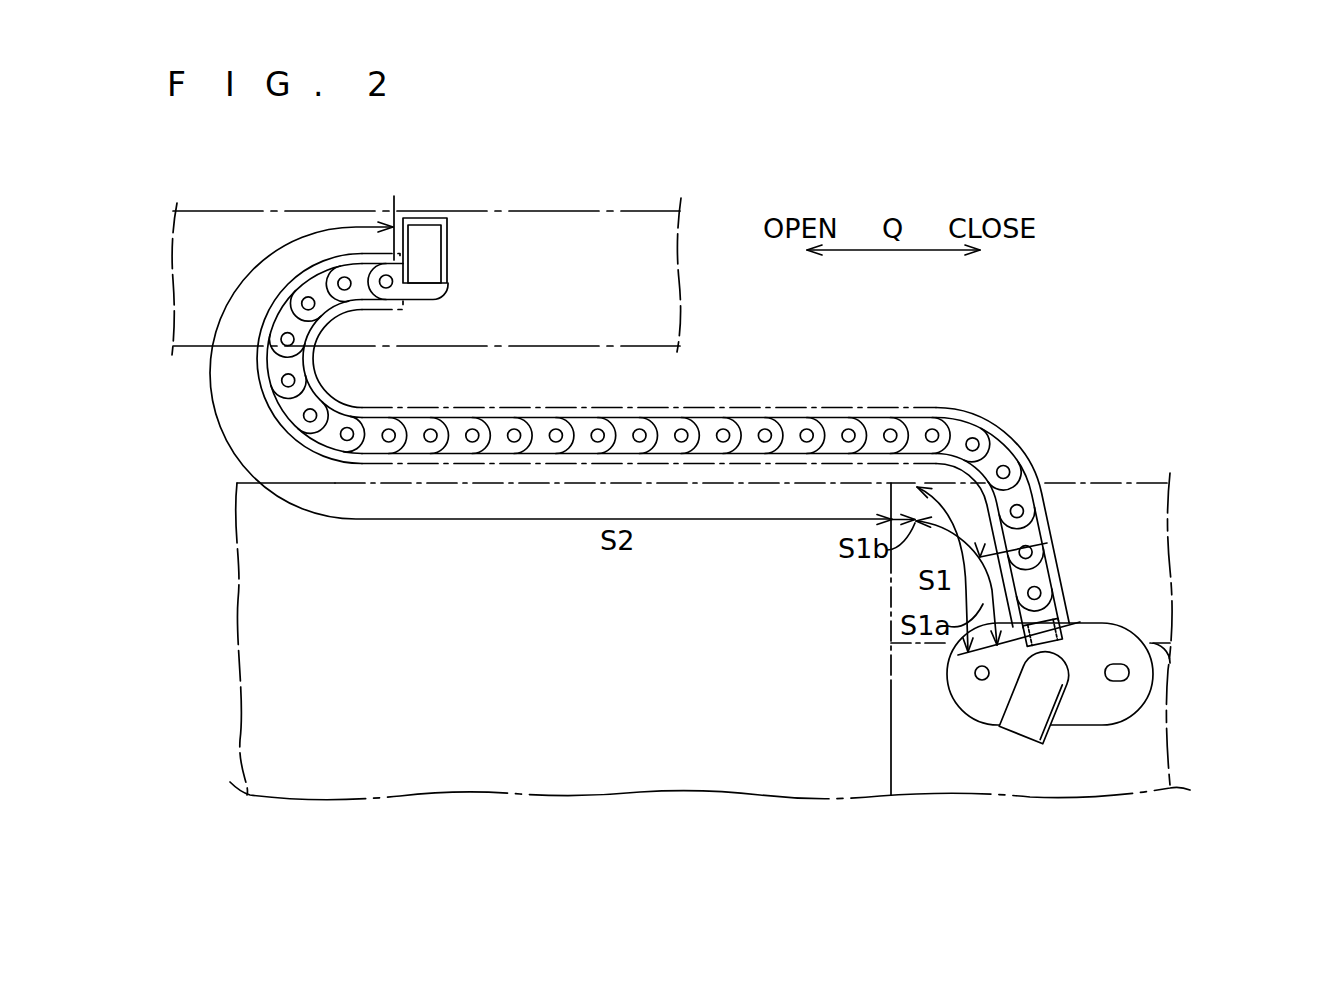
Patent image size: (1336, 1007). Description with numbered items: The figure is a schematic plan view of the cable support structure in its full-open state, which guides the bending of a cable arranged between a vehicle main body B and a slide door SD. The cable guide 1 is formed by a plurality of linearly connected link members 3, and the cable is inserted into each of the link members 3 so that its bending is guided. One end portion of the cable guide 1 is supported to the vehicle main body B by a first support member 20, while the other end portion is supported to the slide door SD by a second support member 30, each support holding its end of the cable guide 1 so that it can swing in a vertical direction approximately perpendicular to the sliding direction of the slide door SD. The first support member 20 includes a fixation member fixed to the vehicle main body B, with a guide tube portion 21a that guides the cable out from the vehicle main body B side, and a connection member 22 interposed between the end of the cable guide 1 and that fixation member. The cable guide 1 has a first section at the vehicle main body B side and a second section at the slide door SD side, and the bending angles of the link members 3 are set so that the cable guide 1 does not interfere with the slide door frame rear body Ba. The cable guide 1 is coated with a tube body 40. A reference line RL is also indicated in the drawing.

The cable guide 1 is at (662, 446).
The link members 3 is at (546, 422).
The first support member 20 is at (1088, 705).
The guide tube portion 21a is at (1068, 632).
The connection member 22 is at (1049, 625).
The second support member 30 is at (447, 286).
The tube body 40 is at (866, 405).
The slide door SD is at (547, 208).
The vehicle main body B is at (1170, 617).
The slide door frame rear body Ba is at (767, 484).
The reference line RL is at (1175, 658).